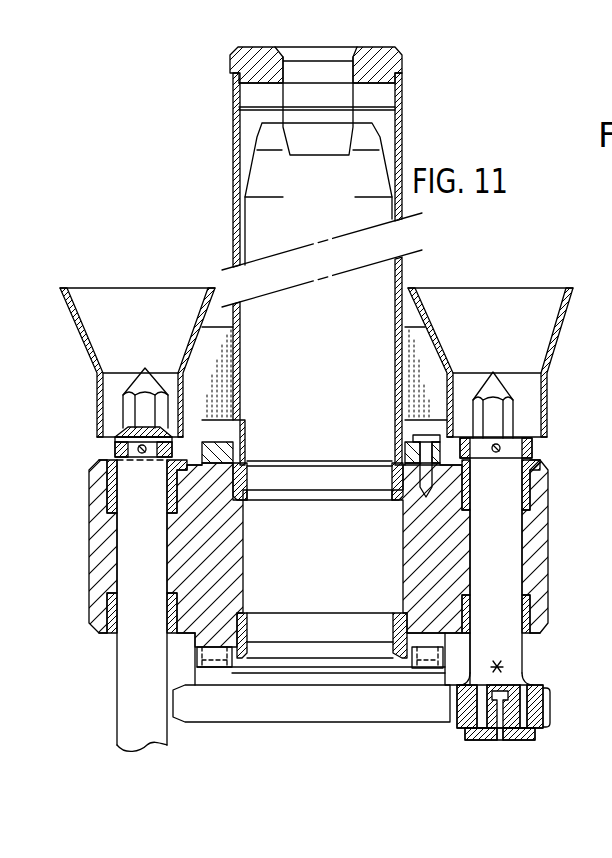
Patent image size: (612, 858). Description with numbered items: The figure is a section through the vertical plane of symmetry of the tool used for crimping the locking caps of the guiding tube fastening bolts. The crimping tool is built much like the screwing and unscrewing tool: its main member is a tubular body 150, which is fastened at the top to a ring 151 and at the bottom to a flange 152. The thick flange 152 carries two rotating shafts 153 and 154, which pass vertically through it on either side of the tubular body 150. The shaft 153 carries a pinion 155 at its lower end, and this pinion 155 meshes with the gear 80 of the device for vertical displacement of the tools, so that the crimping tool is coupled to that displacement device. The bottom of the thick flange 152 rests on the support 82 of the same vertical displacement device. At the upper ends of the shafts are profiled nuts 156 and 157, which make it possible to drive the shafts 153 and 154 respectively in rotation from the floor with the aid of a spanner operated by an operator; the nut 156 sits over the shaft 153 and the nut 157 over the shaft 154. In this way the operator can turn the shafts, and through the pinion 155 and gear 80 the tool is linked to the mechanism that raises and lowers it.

The gear 80 is at (373, 707).
The support 82 is at (432, 677).
The tubular body 150 is at (233, 222).
The ring 151 is at (262, 64).
The flange 152 is at (538, 519).
The rotating shaft 153 is at (505, 574).
The rotating shaft 154 is at (133, 681).
The pinion 155 is at (540, 705).
The profiled nut 156 is at (497, 413).
The profiled nut 157 is at (145, 407).